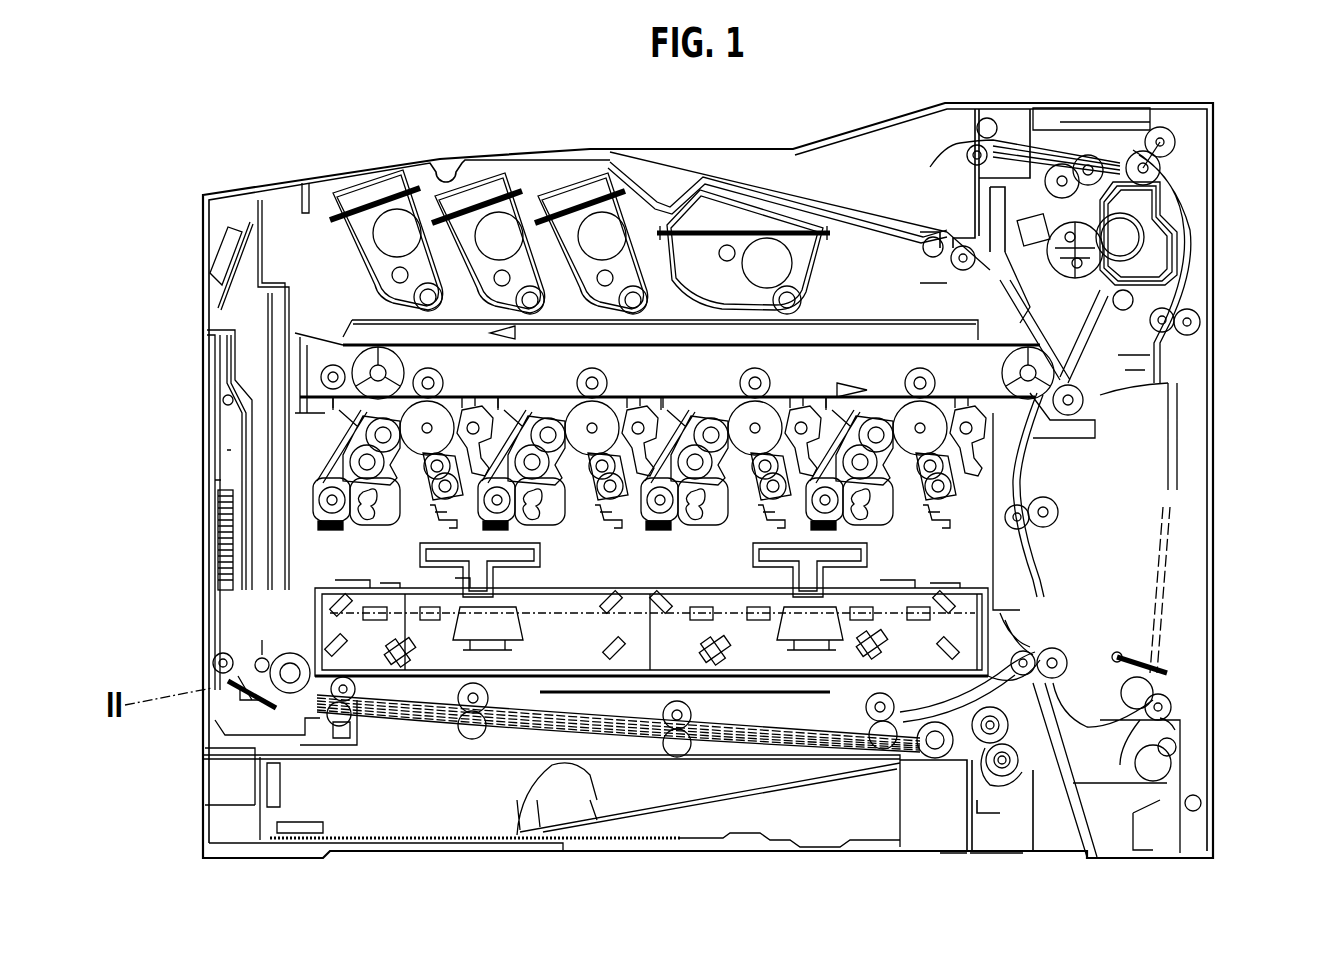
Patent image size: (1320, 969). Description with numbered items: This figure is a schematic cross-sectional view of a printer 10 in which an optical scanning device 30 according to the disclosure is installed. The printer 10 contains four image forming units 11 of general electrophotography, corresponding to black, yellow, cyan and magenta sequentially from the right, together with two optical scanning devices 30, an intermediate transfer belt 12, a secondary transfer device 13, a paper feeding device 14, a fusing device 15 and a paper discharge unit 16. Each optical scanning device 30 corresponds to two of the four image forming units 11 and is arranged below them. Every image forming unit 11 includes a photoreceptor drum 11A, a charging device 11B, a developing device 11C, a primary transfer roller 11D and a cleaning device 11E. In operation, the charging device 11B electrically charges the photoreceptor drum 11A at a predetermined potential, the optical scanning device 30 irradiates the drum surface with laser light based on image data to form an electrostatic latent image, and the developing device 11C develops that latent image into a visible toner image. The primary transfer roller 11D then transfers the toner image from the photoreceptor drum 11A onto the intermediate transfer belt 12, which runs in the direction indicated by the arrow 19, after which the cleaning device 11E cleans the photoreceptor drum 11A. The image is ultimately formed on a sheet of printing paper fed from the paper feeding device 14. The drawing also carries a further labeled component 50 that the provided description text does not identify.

The printer 10 is at (298, 108).
The image forming unit 11 is at (420, 350).
The photoreceptor drum 11A is at (372, 540).
The charging device 11B is at (432, 495).
The developing device 11C is at (566, 405).
The primary transfer roller 11D is at (527, 297).
The cleaning device 11E is at (468, 418).
The intermediate transfer belt 12 is at (853, 323).
The secondary transfer device 13 is at (1115, 381).
The paper feeding device 14 is at (1062, 628).
The fusing device 15 is at (1197, 177).
The paper discharge unit 16 is at (867, 176).
The arrow 19 is at (523, 320).
The optical scanning device 30 is at (433, 688).
The support member 50 is at (510, 573).